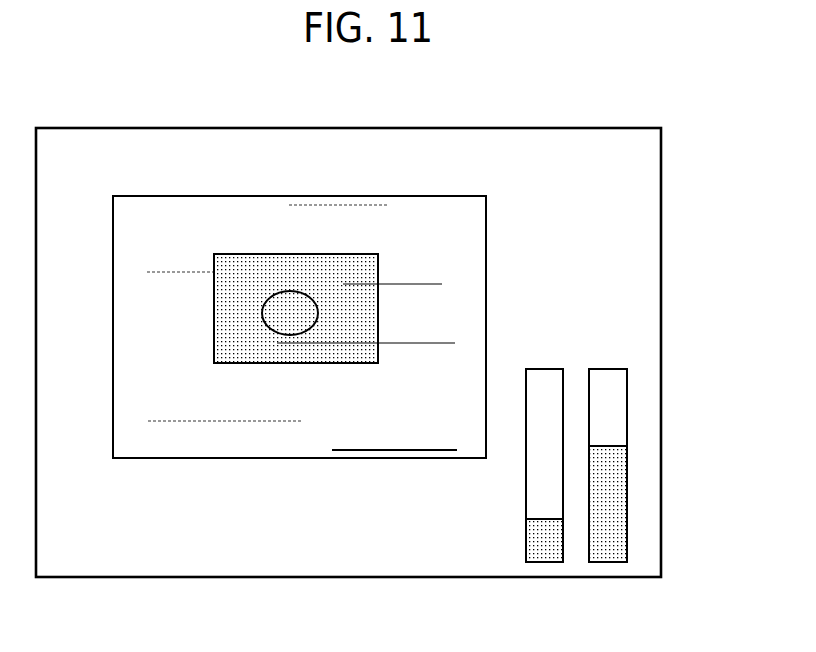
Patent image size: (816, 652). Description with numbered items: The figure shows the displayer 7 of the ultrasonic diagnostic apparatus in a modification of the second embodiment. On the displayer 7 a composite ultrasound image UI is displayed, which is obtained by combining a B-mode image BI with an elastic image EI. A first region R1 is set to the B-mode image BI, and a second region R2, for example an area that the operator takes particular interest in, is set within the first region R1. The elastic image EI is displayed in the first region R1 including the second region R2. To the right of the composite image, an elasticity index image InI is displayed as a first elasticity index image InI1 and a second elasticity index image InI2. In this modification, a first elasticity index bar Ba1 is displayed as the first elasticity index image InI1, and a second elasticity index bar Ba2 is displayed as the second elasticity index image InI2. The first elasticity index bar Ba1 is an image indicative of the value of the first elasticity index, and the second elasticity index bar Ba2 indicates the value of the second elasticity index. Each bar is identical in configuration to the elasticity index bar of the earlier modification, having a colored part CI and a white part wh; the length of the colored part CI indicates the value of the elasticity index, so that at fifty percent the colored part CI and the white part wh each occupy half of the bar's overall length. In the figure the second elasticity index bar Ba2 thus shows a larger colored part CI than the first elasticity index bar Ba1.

The displayer 7 is at (661, 212).
The composite ultrasound image UI is at (256, 192).
The B-mode image BI is at (486, 250).
The first region R1 is at (227, 254).
The elastic image EI is at (354, 280).
The second region R2 is at (262, 320).
The elasticity index image InI is at (571, 292).
The first elasticity index image InI1 is at (532, 362).
The second elasticity index image InI2 is at (602, 362).
The first elasticity index bar Ba1 is at (526, 487).
The second elasticity index bar Ba2 is at (628, 397).
The white part wh is at (553, 405).
The colored part CI is at (550, 557).